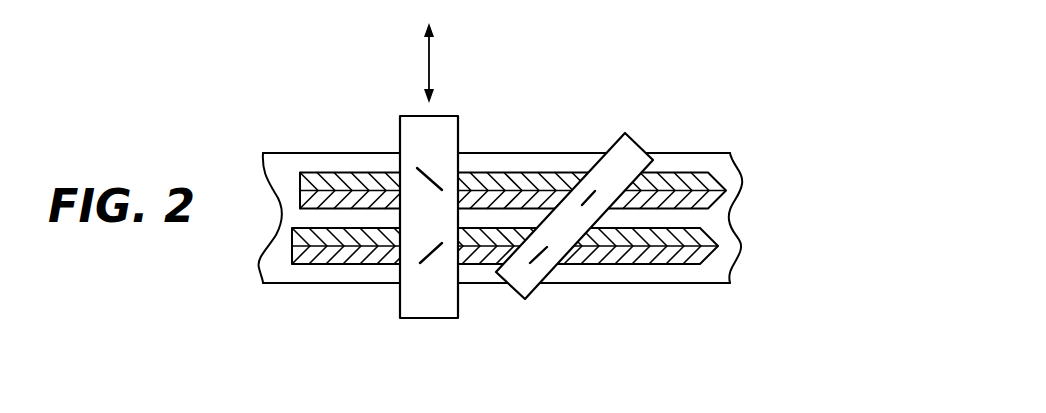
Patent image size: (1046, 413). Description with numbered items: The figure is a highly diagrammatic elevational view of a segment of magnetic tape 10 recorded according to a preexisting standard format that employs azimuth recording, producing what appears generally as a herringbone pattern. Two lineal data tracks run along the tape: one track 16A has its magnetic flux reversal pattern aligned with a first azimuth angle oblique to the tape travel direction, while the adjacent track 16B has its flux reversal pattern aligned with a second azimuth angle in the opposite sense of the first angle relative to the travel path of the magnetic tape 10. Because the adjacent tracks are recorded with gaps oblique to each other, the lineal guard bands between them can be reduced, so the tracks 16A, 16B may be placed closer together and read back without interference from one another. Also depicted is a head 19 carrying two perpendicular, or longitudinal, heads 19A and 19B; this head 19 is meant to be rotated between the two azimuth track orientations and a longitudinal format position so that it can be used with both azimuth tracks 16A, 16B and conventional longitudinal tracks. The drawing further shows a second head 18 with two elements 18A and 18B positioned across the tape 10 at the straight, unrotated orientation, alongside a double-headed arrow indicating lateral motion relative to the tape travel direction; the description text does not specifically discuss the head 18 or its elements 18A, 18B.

The magnetic tape 10 is at (703, 153).
The track 16A is at (718, 180).
The adjacent track 16B is at (712, 257).
The first movable bar / shutter 18 is at (399, 117).
The first reflective element of bar 18 18A is at (429, 176).
The second reflective element of bar 18 18B is at (428, 262).
The head 19 is at (525, 300).
The perpendicular head 19A is at (584, 197).
The perpendicular head 19B is at (536, 261).